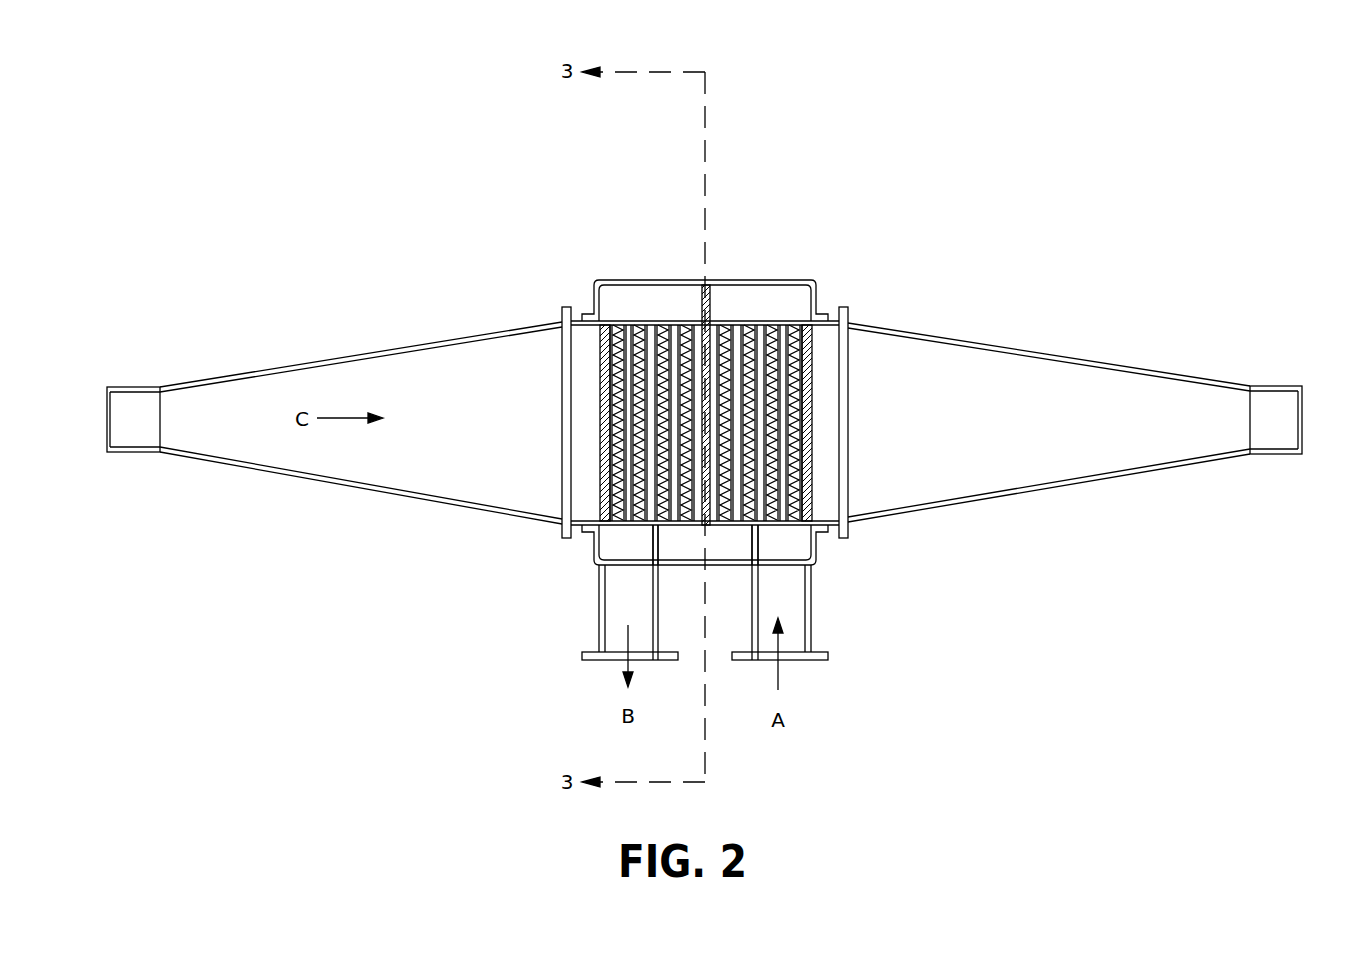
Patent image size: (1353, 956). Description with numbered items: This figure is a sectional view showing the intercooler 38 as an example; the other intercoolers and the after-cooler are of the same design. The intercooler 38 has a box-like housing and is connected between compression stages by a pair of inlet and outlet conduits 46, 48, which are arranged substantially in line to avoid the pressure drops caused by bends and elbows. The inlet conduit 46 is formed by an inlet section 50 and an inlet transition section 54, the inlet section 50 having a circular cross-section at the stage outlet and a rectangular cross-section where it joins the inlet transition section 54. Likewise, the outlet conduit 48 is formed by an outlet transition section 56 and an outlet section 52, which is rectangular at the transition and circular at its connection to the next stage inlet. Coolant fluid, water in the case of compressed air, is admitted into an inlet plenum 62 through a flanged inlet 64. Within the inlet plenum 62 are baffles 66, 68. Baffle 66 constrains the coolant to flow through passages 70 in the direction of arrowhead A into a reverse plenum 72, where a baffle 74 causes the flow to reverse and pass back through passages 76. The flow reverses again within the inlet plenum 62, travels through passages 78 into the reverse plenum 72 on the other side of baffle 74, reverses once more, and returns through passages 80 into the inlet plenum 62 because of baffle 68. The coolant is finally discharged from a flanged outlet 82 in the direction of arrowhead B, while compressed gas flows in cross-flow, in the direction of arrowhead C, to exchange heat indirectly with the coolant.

The intercooler 38 is at (803, 145).
The inlet conduit 46 is at (328, 200).
The outlet conduit 48 is at (1104, 237).
The inlet section 50 is at (130, 403).
The outlet section 52 is at (1270, 400).
The inlet transition section 54 is at (340, 383).
The outlet transition section 56 is at (1025, 372).
The inlet plenum 62 is at (828, 560).
The flanged inlet 64 is at (795, 620).
The baffle 66 is at (750, 542).
The baffle 68 is at (657, 543).
The passages 70 is at (797, 360).
The reverse plenum 72 is at (743, 280).
The baffle 74 is at (703, 306).
The passages 76 is at (750, 353).
The passages 78 is at (702, 347).
The passages 80 is at (627, 427).
The flanged outlet 82 is at (602, 607).